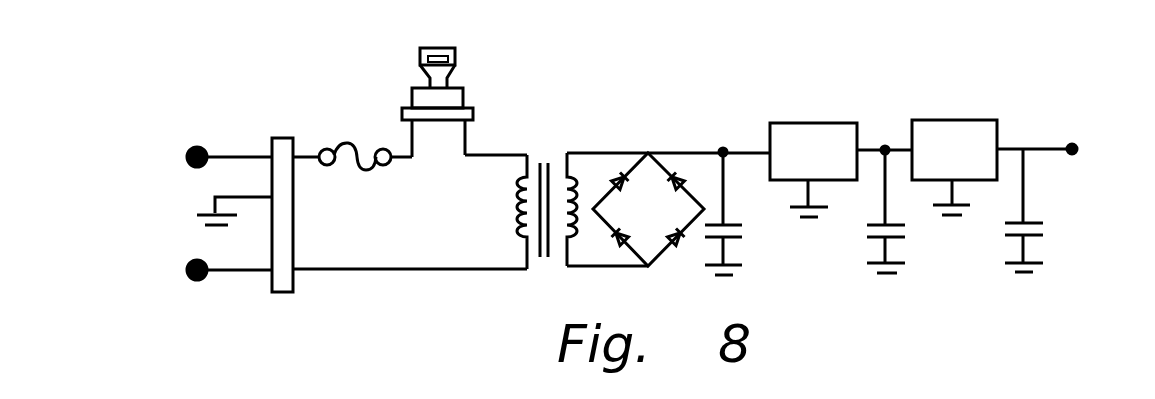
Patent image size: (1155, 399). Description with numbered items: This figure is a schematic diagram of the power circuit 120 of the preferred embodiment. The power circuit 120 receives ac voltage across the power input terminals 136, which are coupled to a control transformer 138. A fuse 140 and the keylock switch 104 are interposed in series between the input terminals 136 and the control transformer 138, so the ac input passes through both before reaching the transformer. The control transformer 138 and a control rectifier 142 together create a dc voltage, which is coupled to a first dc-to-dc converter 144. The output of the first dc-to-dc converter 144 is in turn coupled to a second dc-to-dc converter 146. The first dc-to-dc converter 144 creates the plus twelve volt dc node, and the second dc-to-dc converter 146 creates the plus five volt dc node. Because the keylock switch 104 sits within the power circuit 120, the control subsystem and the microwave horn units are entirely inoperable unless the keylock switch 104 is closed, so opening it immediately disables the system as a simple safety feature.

The power circuit 120 is at (861, 52).
The power input terminals 136 is at (192, 200).
The fuse 140 is at (357, 145).
The keylock switch 104 is at (441, 100).
The control transformer 138 is at (546, 284).
The control rectifier 142 is at (647, 190).
The first dc-to-dc converter 144 is at (813, 170).
The second dc-to-dc converter 146 is at (954, 167).